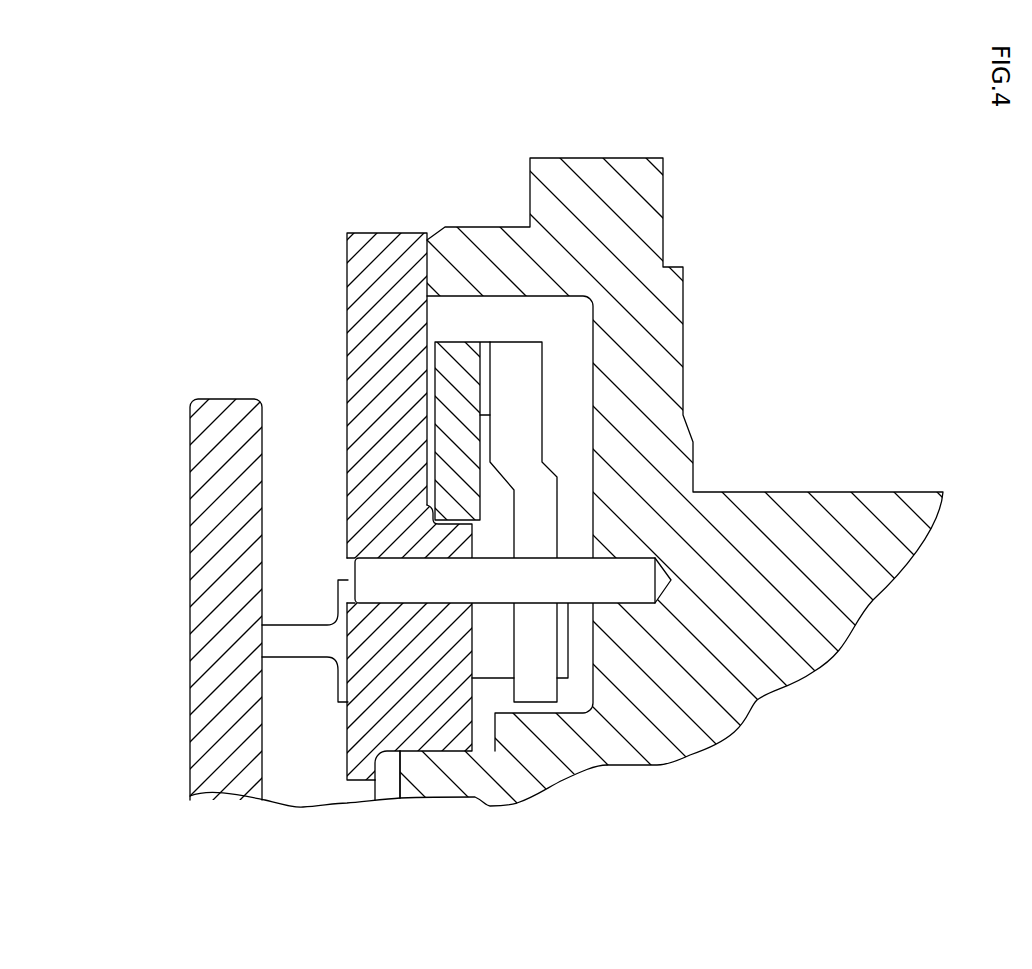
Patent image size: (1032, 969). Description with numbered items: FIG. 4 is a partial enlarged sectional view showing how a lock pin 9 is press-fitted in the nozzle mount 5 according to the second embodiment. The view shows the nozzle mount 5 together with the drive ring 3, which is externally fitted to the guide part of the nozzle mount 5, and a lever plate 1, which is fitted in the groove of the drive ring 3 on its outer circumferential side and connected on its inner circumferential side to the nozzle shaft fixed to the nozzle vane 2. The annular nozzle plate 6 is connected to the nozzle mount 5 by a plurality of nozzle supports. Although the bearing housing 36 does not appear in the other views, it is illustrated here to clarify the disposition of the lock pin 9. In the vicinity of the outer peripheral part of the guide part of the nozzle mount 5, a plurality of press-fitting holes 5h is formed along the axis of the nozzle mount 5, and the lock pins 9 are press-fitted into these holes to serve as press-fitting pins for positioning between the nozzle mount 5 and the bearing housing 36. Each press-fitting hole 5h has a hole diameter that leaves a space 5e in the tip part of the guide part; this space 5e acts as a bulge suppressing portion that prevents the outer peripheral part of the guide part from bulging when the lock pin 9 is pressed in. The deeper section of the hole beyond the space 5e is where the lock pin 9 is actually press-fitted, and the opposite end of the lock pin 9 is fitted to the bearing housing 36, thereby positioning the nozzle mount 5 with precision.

The lever plate 1 is at (543, 372).
The nozzle vane 2 is at (297, 658).
The drive ring 3 is at (457, 342).
The nozzle mount 5 is at (368, 232).
The space 5e is at (467, 547).
The press-fitting hole 5h is at (343, 572).
The nozzle plate 6 is at (222, 398).
The lock pin 9 is at (603, 590).
The bearing housing 36 is at (726, 688).